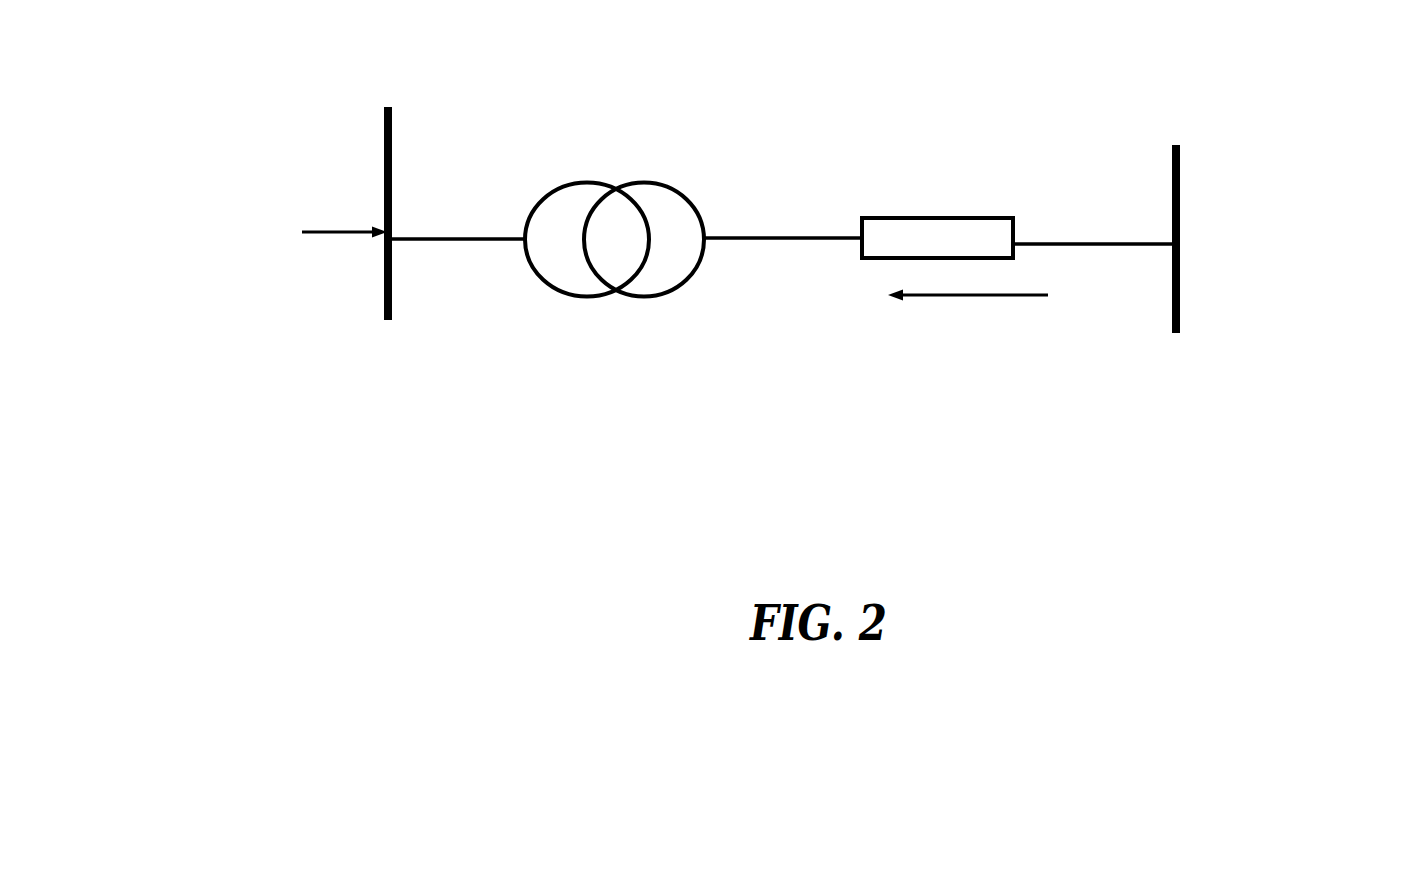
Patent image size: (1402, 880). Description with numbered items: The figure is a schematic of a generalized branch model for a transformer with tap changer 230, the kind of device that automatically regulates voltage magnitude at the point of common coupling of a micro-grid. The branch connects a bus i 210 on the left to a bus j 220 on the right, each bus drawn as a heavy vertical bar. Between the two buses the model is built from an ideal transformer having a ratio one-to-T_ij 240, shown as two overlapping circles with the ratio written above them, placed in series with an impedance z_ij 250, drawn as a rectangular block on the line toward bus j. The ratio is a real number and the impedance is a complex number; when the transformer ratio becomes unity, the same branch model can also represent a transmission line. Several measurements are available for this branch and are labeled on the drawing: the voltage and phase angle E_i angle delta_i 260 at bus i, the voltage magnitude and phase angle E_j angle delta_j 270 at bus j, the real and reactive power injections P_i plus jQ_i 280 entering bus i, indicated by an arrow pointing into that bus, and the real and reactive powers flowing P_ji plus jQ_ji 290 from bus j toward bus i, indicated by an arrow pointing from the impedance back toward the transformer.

The bus i 210 is at (389, 60).
The bus j 220 is at (1187, 90).
The transformer with tap changer 230 is at (803, 240).
The transformer ratio 1:T_ij 240 is at (623, 110).
The impedance z_ij 250 is at (942, 158).
The voltage and phase angle E_i angle delta_i 260 is at (418, 382).
The voltage magnitude and phase angle E_j angle delta_j 270 is at (1163, 387).
The real and reactive power injections P_i + jQ_i 280 is at (302, 310).
The real and reactive powers flowing P_ji + jQ_ji 290 is at (965, 362).